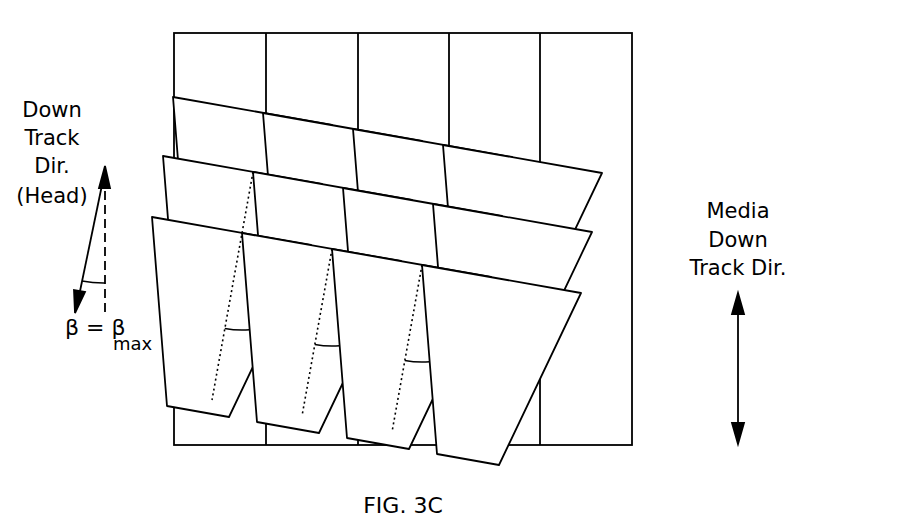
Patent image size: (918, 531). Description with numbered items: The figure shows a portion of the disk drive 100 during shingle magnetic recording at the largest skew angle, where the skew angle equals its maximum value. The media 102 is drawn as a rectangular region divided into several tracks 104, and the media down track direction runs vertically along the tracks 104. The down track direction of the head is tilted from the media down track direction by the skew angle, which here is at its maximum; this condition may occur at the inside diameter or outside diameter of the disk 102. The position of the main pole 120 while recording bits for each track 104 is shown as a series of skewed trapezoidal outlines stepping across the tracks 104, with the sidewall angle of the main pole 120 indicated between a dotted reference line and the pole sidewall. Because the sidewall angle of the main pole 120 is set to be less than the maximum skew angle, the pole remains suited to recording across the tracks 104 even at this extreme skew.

The disk drive 100 is at (79, 29).
The media 102 is at (647, 171).
The tracks 104 is at (403, 239).
The main pole 120 is at (377, 281).